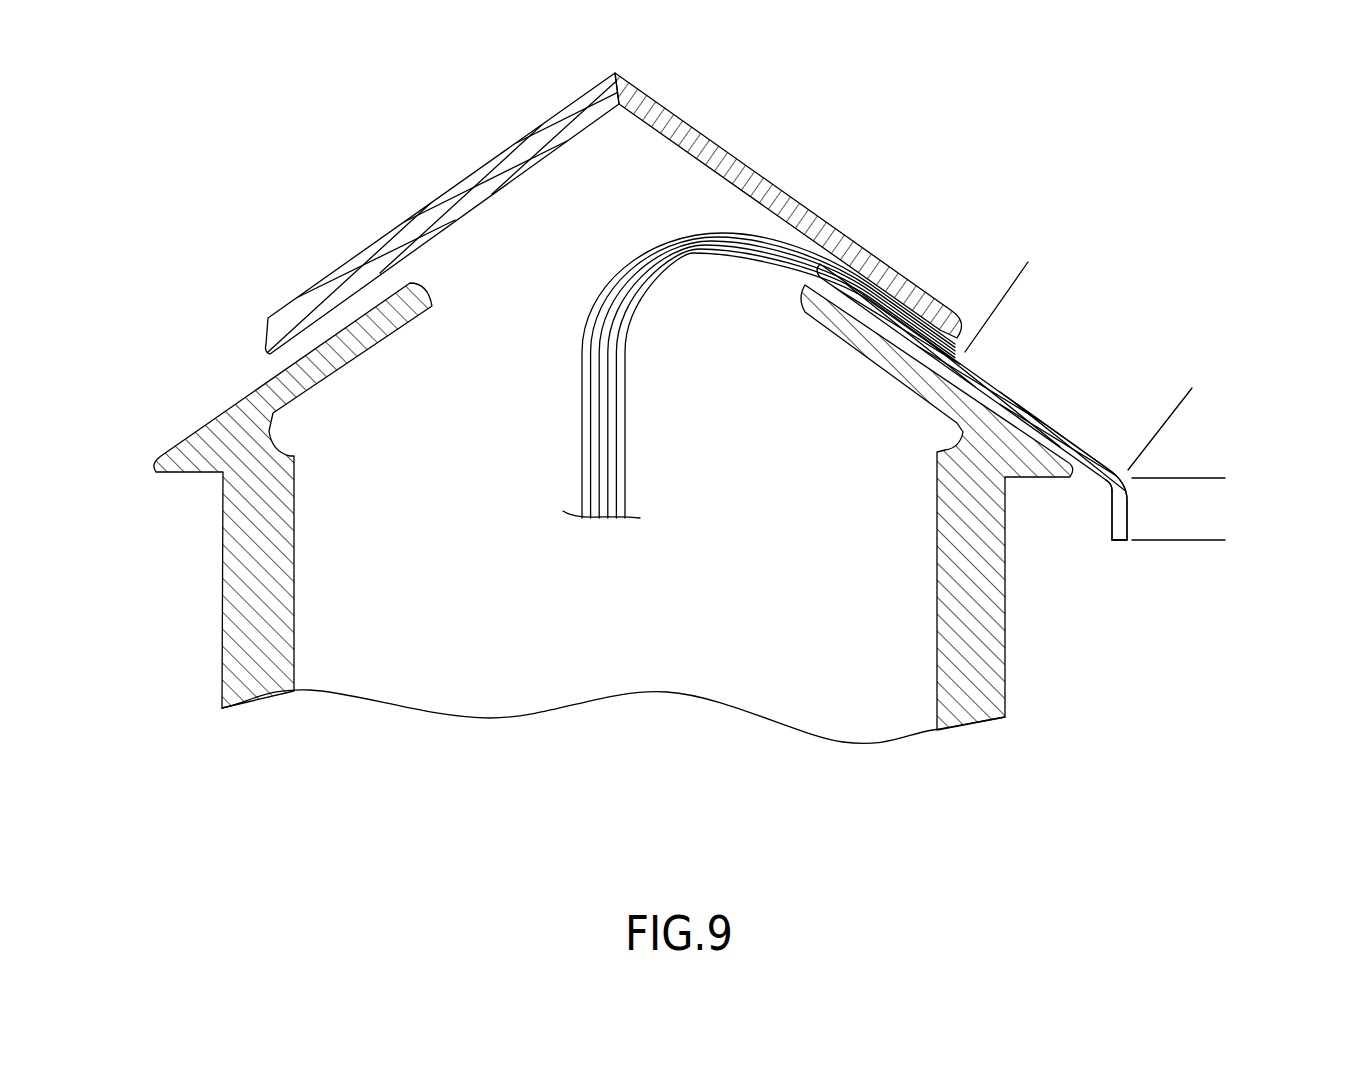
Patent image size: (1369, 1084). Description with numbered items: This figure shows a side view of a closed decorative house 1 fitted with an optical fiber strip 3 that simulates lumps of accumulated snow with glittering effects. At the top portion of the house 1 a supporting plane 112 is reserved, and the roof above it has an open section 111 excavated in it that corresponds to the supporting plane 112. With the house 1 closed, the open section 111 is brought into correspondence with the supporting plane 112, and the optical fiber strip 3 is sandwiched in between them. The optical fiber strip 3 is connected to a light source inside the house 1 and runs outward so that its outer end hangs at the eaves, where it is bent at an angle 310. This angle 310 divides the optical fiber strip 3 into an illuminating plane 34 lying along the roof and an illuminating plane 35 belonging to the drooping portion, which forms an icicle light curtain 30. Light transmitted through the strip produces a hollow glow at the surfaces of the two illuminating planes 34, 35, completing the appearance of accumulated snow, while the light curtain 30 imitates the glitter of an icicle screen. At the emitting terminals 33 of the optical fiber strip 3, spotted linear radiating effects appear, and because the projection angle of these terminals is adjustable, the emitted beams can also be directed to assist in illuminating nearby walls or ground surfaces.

The house 1 is at (737, 160).
The open section 111 is at (1045, 410).
The supporting plane 112 is at (886, 333).
The optical fiber strip 3 is at (1019, 402).
The icicle light curtain 30 is at (1127, 505).
The angle 310 is at (1110, 487).
The emitting terminals 33 is at (1122, 542).
The illuminating plane 34 is at (1190, 392).
The illuminating plane of the light curtain 35 is at (1217, 478).